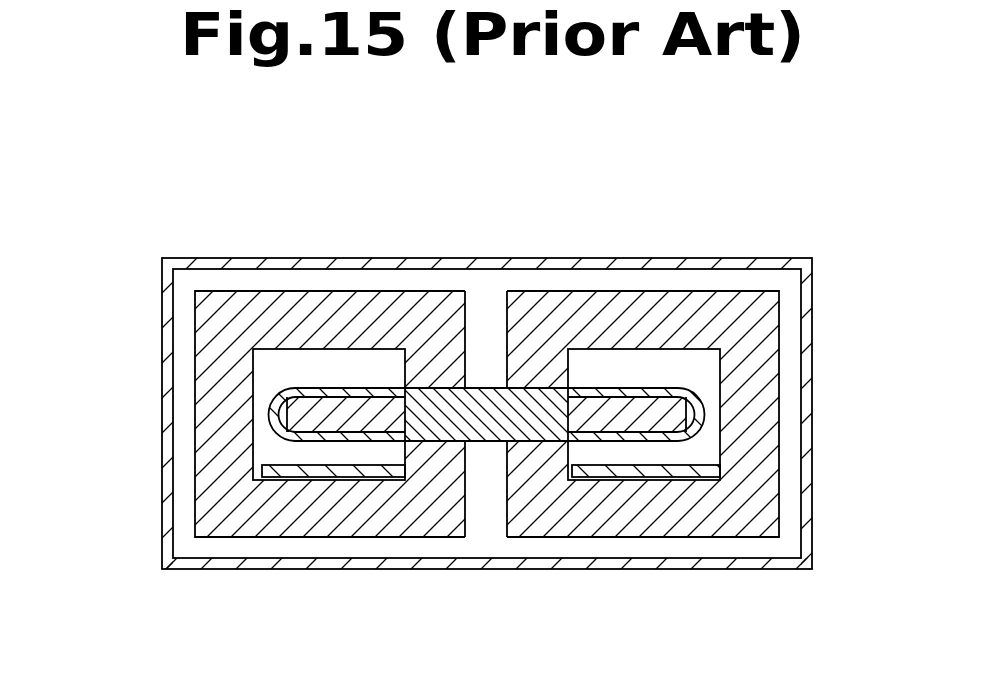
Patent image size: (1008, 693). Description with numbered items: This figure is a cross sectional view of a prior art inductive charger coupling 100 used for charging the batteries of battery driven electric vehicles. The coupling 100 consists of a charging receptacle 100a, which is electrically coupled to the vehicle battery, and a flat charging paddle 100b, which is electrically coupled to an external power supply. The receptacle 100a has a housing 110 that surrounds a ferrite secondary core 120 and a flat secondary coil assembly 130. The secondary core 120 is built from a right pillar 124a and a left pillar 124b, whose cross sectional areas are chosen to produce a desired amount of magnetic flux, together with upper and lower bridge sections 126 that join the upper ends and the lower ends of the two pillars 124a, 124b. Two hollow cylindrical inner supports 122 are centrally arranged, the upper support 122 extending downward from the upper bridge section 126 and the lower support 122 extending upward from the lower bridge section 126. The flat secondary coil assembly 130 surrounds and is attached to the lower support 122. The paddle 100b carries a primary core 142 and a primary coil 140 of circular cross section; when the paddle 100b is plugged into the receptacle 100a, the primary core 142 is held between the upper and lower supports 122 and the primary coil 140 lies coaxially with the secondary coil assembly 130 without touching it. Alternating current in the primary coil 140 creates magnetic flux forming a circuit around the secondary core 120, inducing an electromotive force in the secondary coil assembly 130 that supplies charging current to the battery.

The inductive charger coupling 100 is at (759, 231).
The charging receptacle 100a is at (188, 258).
The flat charging paddle 100b is at (292, 380).
The housing 110 is at (156, 371).
The ferrite secondary core 120 is at (783, 312).
The inner support 122 is at (437, 463).
The right pillar 124a is at (762, 422).
The left pillar 124b is at (220, 418).
The bridge section 126 is at (662, 308).
The flat secondary coil assembly 130 is at (256, 455).
The primary coil 140 is at (358, 417).
The primary core 142 is at (498, 422).